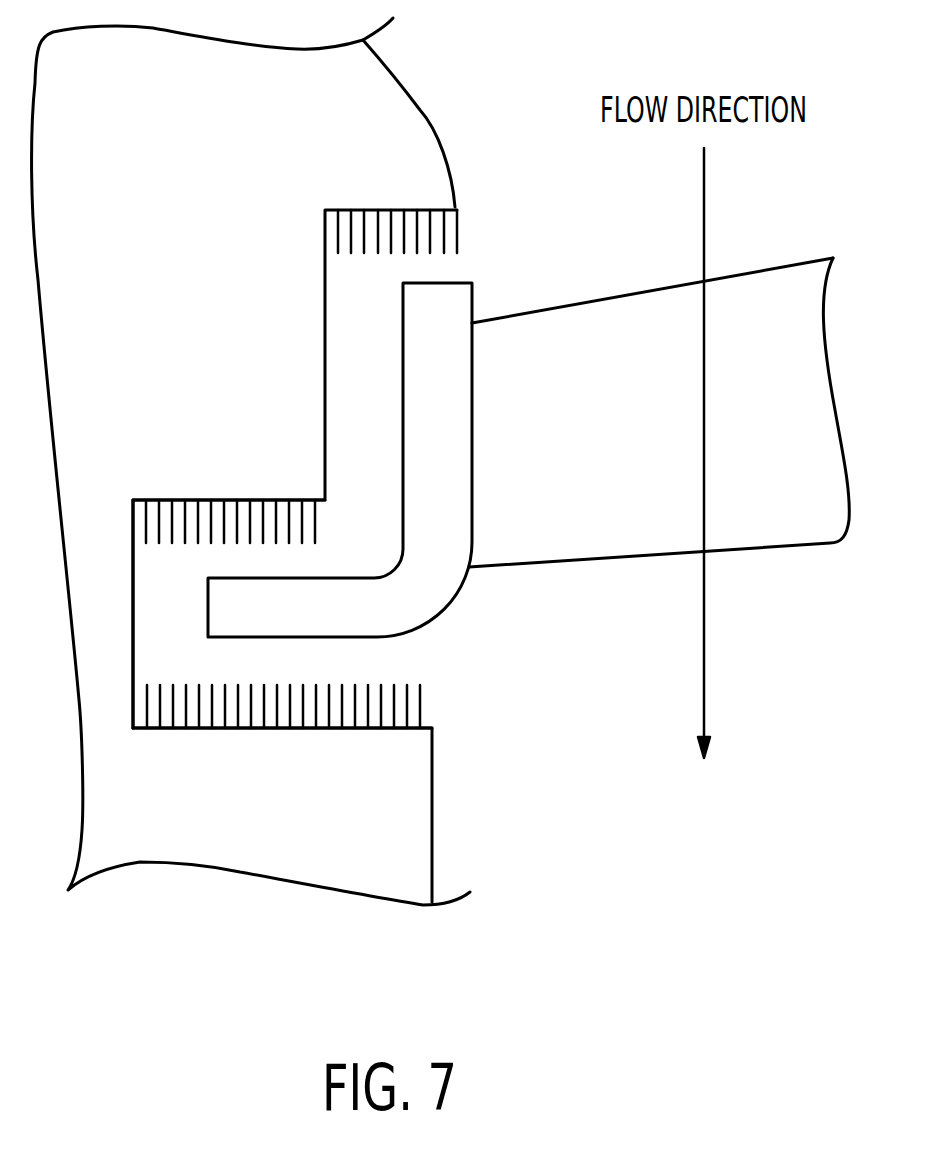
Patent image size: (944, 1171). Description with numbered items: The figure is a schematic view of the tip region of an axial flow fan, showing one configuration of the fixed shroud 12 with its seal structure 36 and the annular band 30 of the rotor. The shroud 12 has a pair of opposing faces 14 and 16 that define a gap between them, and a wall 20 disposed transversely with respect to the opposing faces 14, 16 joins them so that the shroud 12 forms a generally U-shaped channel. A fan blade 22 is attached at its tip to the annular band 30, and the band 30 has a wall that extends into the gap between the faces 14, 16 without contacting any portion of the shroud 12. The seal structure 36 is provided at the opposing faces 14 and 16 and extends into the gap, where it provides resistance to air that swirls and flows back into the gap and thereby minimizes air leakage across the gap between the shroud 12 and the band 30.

The shroud 12 is at (432, 815).
The opposing face 14 is at (205, 510).
The opposing face 16 is at (232, 685).
The wall 20 is at (135, 637).
The fan blade 22 is at (578, 315).
The annular band 30 is at (433, 617).
The seal structure 36 is at (382, 226).